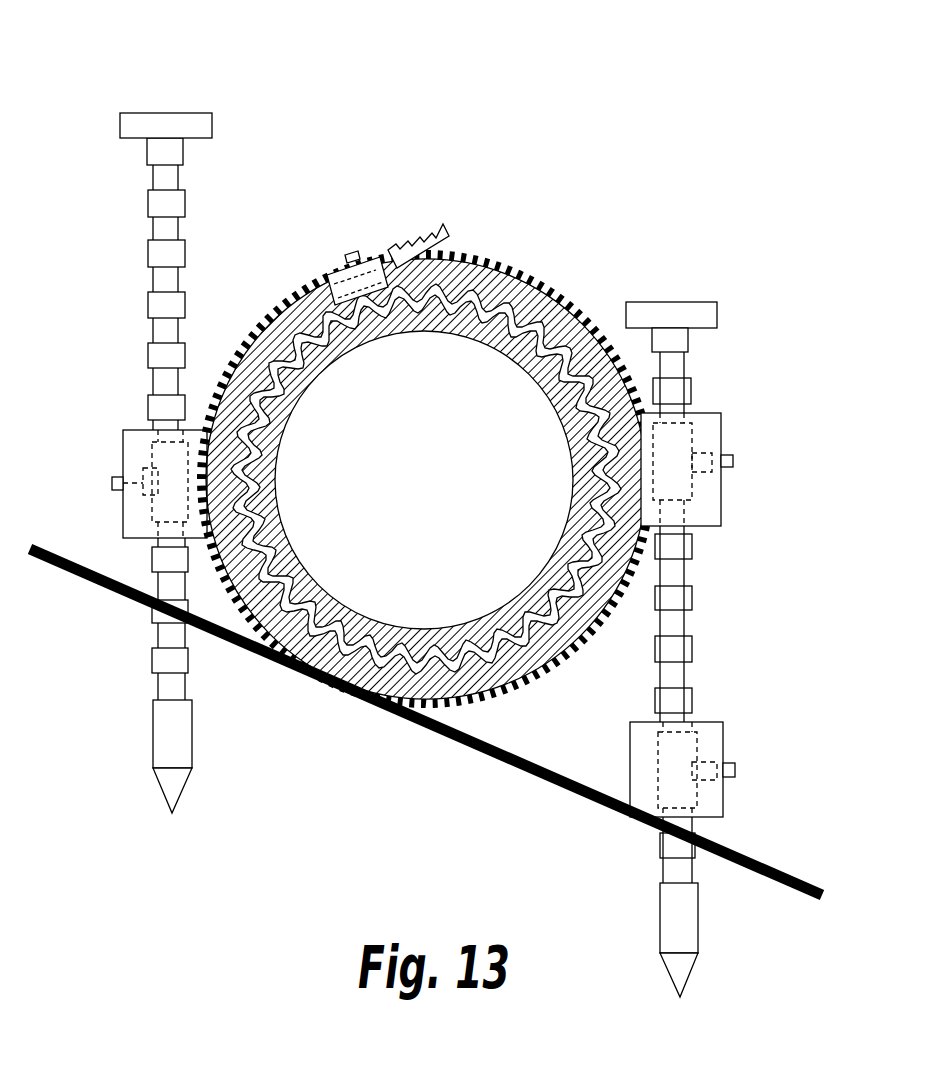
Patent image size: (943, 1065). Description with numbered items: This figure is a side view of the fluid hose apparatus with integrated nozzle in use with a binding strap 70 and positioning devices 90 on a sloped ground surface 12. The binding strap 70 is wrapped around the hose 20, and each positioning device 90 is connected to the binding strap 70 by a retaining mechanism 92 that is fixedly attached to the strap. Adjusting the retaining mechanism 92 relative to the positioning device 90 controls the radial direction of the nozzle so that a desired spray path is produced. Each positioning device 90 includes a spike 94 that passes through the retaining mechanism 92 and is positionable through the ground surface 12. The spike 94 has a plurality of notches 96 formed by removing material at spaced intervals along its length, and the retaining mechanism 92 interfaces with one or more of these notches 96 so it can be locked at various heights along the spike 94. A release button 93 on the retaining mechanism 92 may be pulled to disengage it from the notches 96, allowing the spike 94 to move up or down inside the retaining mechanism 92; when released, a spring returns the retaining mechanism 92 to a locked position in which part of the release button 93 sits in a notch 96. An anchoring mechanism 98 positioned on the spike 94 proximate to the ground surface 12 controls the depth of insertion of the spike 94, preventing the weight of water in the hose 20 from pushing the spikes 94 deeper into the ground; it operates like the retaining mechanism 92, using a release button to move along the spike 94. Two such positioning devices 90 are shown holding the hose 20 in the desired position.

The ground surface 12 is at (364, 819).
The hose 20 is at (434, 494).
The binding strap 70 is at (490, 272).
The positioning device 90 is at (170, 78).
The retaining mechanism 92 is at (137, 503).
The release button 93 is at (112, 477).
The spike 94 is at (137, 122).
The notches 96 is at (190, 235).
The anchoring mechanism 98 is at (710, 740).